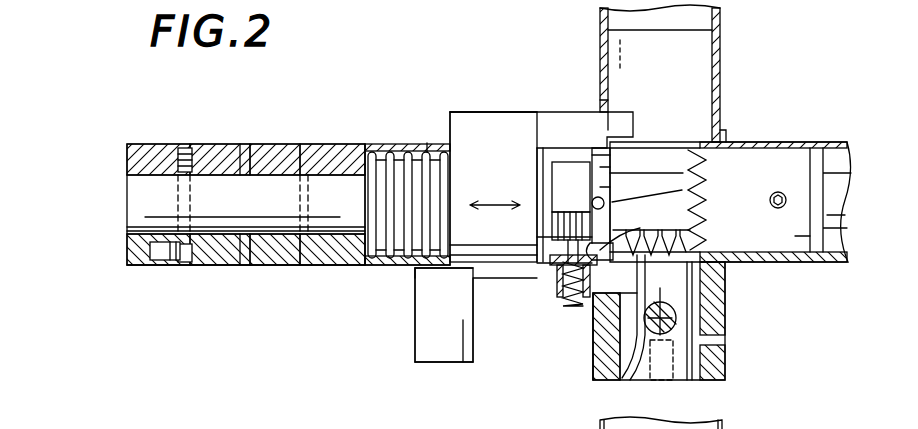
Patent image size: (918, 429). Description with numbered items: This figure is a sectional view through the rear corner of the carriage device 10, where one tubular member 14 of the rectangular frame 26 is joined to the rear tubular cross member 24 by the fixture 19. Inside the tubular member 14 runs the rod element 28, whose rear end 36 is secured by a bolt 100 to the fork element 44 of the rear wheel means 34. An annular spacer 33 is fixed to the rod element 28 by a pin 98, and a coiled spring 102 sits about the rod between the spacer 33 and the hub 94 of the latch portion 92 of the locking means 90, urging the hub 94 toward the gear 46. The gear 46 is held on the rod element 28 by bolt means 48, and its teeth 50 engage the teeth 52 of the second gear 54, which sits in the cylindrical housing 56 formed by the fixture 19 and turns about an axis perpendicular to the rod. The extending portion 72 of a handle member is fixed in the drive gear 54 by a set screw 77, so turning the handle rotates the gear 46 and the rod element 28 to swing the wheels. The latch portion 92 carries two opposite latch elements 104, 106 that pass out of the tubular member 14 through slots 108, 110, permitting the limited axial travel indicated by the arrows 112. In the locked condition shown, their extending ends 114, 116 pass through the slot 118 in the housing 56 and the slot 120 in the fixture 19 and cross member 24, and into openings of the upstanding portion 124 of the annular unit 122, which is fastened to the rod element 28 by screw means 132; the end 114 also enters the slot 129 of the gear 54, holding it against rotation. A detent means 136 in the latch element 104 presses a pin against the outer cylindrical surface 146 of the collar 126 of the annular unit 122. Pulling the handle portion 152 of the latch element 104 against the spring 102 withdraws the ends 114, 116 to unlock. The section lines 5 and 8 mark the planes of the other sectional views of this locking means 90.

The carriage device 10 is at (380, 25).
The tubular member 14 is at (330, 143).
The fixture 19 is at (700, 42).
The rear tubular cross member 24 is at (718, 30).
The rectangular frame 26 is at (730, 428).
The rod element 28 is at (380, 165).
The spacer 33 is at (246, 143).
The rear wheel means 34 is at (163, 143).
The rear end 36 is at (196, 143).
The fork element 44 is at (215, 265).
The gear 46 is at (810, 242).
The bolt means 48 is at (768, 202).
The teeth 50 is at (605, 175).
The teeth 52 is at (686, 213).
The second gear 54 is at (640, 378).
The cylindrical housing 56 is at (715, 345).
The extending portion 72 is at (668, 312).
The set screw 77 is at (665, 382).
The locking means 90 is at (495, 112).
The latch portion 92 is at (415, 348).
The hub 94 is at (460, 125).
The pin 98 is at (298, 143).
The bolt 100 is at (178, 265).
The coiled spring 102 is at (330, 265).
The latch element 104 is at (490, 272).
The latch element 106 is at (508, 112).
The slot 108 is at (415, 285).
The slot 110 is at (428, 143).
The arrows 112 is at (400, 262).
The extending end 114 is at (608, 335).
The extending end 116 is at (620, 112).
The slot 118 is at (590, 318).
The slot 120 is at (604, 100).
The annular unit 122 is at (560, 178).
The upstanding portion 124 is at (612, 152).
The collar 126 is at (552, 222).
The slot 129 is at (714, 236).
The screw means 132 is at (703, 176).
The detent means 136 is at (415, 350).
The outer cylindrical surface 146 is at (560, 186).
The handle portion 152 is at (440, 368).
The section line 5 is at (543, 100).
The section line 8 is at (541, 295).